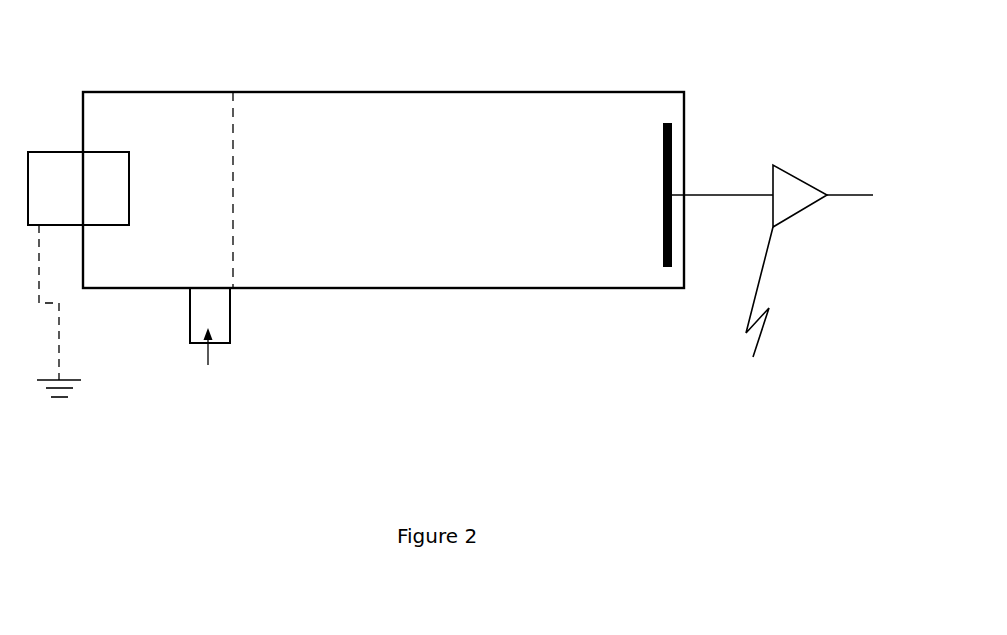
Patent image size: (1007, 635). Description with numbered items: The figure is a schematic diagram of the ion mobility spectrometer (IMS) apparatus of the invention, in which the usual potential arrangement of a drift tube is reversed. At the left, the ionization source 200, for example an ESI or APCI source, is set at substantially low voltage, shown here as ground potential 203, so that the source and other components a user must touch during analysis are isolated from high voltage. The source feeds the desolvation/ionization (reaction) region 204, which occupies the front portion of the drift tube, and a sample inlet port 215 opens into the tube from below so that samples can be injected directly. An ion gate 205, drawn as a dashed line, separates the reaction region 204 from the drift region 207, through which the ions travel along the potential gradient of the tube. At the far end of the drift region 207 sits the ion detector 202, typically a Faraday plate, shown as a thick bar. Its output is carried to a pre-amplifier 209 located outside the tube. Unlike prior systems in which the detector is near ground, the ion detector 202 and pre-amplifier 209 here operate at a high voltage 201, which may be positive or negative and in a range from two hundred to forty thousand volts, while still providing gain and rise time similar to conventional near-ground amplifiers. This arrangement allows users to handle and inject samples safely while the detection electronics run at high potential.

The ionization source 200 is at (68, 173).
The high voltage 201 is at (765, 312).
The ion detector 202 is at (663, 247).
The ground potential 203 is at (59, 338).
The desolvation/ionization (reaction) region 204 is at (179, 152).
The ion gate 205 is at (233, 226).
The drift region 207 is at (383, 190).
The pre-amplifier 209 is at (772, 201).
The sample inlet port 215 is at (210, 344).